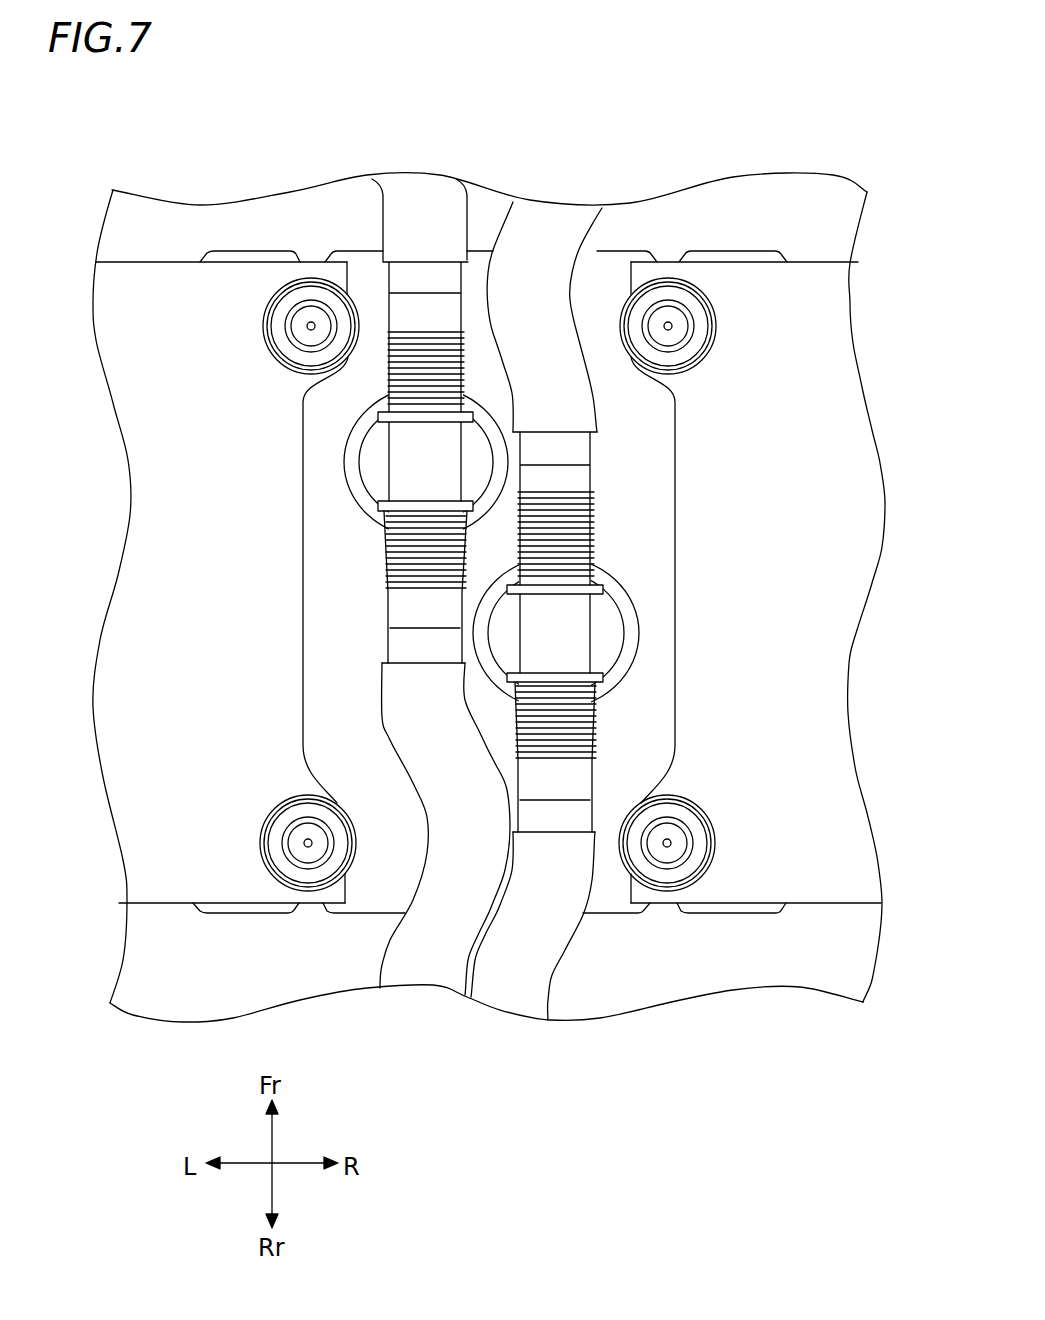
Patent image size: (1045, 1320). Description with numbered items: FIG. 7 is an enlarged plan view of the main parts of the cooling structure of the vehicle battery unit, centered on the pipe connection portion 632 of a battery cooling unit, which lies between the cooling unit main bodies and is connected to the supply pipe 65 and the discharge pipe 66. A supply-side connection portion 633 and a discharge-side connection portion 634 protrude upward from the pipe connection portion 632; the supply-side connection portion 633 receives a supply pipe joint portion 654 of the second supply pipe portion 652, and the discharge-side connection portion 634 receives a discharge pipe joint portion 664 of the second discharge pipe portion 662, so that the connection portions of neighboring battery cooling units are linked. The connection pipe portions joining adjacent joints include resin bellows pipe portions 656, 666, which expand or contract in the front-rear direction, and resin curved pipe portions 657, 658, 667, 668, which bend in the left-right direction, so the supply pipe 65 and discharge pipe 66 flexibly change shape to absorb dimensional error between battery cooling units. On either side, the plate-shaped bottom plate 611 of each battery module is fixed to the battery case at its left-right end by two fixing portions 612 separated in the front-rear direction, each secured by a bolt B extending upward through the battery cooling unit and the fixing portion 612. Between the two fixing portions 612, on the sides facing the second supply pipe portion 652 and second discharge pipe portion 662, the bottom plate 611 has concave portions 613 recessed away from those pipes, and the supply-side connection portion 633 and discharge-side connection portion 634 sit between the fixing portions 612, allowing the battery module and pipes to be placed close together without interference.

The bottom plate 611 is at (822, 309).
The fixing portion 612 is at (313, 251).
The concave portion 613 is at (305, 521).
The pipe connection portion 632 is at (640, 750).
The supply-side connection portion 633 is at (270, 462).
The supply pipe joint portion 654 is at (368, 463).
The discharge-side connection portion 634 is at (706, 633).
The discharge pipe joint portion 664 is at (610, 637).
The supply pipe 65 is at (271, 541).
The second supply pipe portion 652 is at (271, 541).
The bellows pipe portion 656 is at (385, 393).
The curved pipe portion 657 is at (271, 541).
The curved pipe portion 658 is at (95, 778).
The discharge pipe 66 is at (712, 623).
The second discharge pipe portion 662 is at (712, 623).
The bellows pipe portion 666 is at (588, 547).
The curved pipe portion 667 is at (544, 623).
The curved pipe portion 668 is at (568, 1064).
The bolt B is at (310, 325).